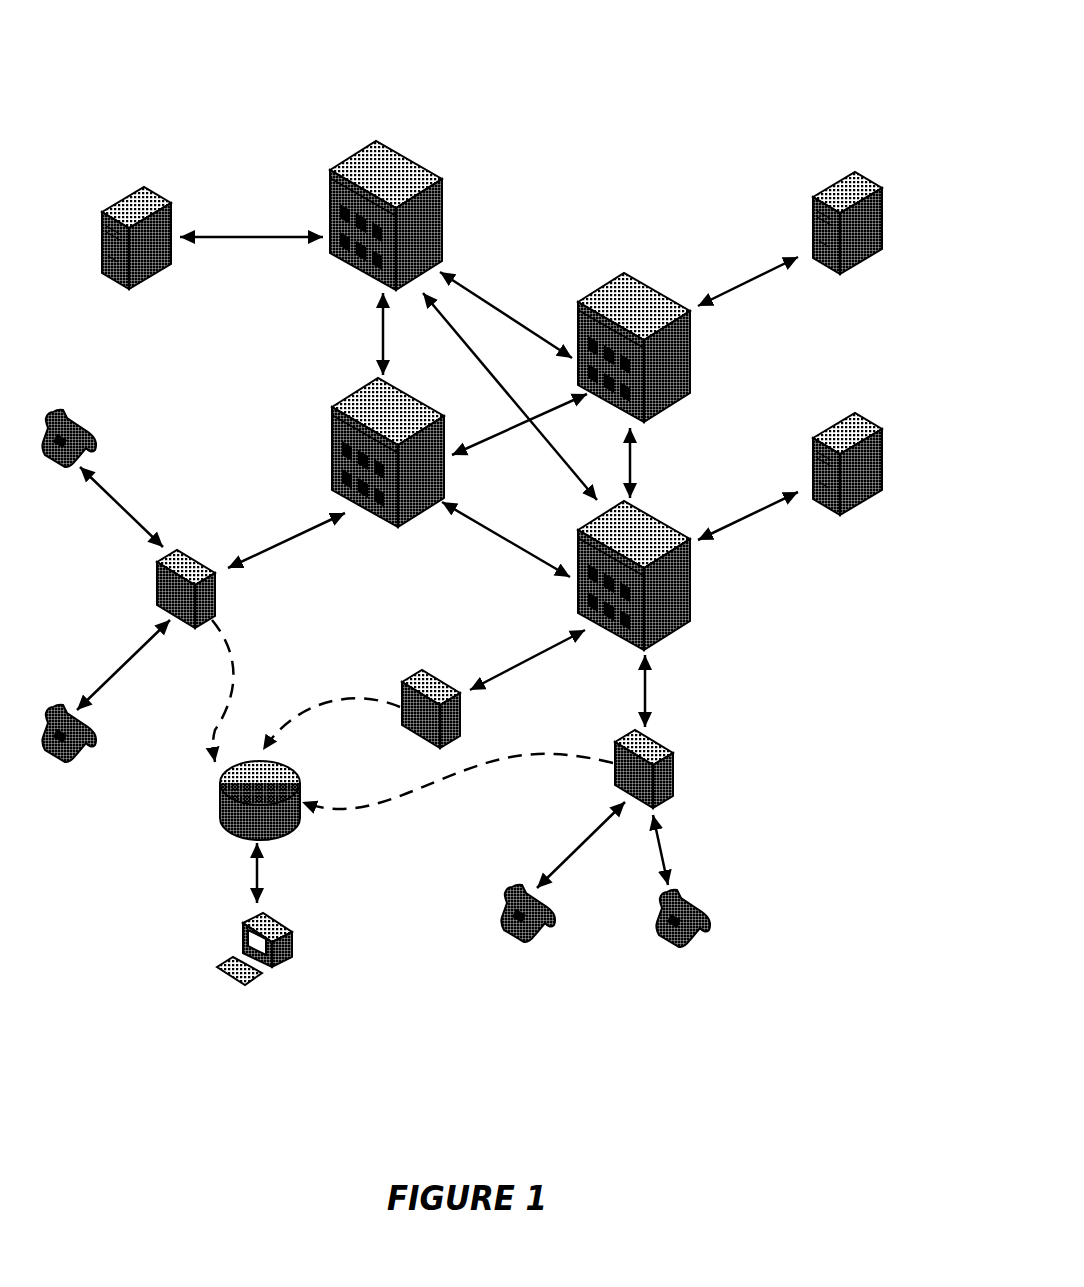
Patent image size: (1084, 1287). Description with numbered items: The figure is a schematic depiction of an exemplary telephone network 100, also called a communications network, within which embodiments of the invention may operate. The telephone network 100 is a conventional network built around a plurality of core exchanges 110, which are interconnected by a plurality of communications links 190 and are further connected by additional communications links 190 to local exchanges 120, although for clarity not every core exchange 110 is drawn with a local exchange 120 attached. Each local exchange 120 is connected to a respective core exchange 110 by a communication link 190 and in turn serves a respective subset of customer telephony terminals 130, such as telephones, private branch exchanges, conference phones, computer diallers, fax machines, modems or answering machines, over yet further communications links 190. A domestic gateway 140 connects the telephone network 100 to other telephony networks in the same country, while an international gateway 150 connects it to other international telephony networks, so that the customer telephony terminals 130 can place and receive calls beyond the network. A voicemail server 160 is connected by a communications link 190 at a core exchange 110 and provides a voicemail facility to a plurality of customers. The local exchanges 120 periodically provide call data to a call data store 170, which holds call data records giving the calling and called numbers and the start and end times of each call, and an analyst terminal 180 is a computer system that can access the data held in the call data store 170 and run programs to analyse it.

The telephone network 100 is at (717, 81).
The core exchange 110 is at (485, 226).
The local exchange 120 is at (158, 585).
The customer telephony terminal 130 is at (137, 450).
The domestic gateway 140 is at (129, 323).
The international gateway 150 is at (920, 223).
The voicemail server 160 is at (850, 560).
The call data store 170 is at (188, 855).
The analyst terminal 180 is at (277, 1000).
The communications link 190 is at (252, 232).